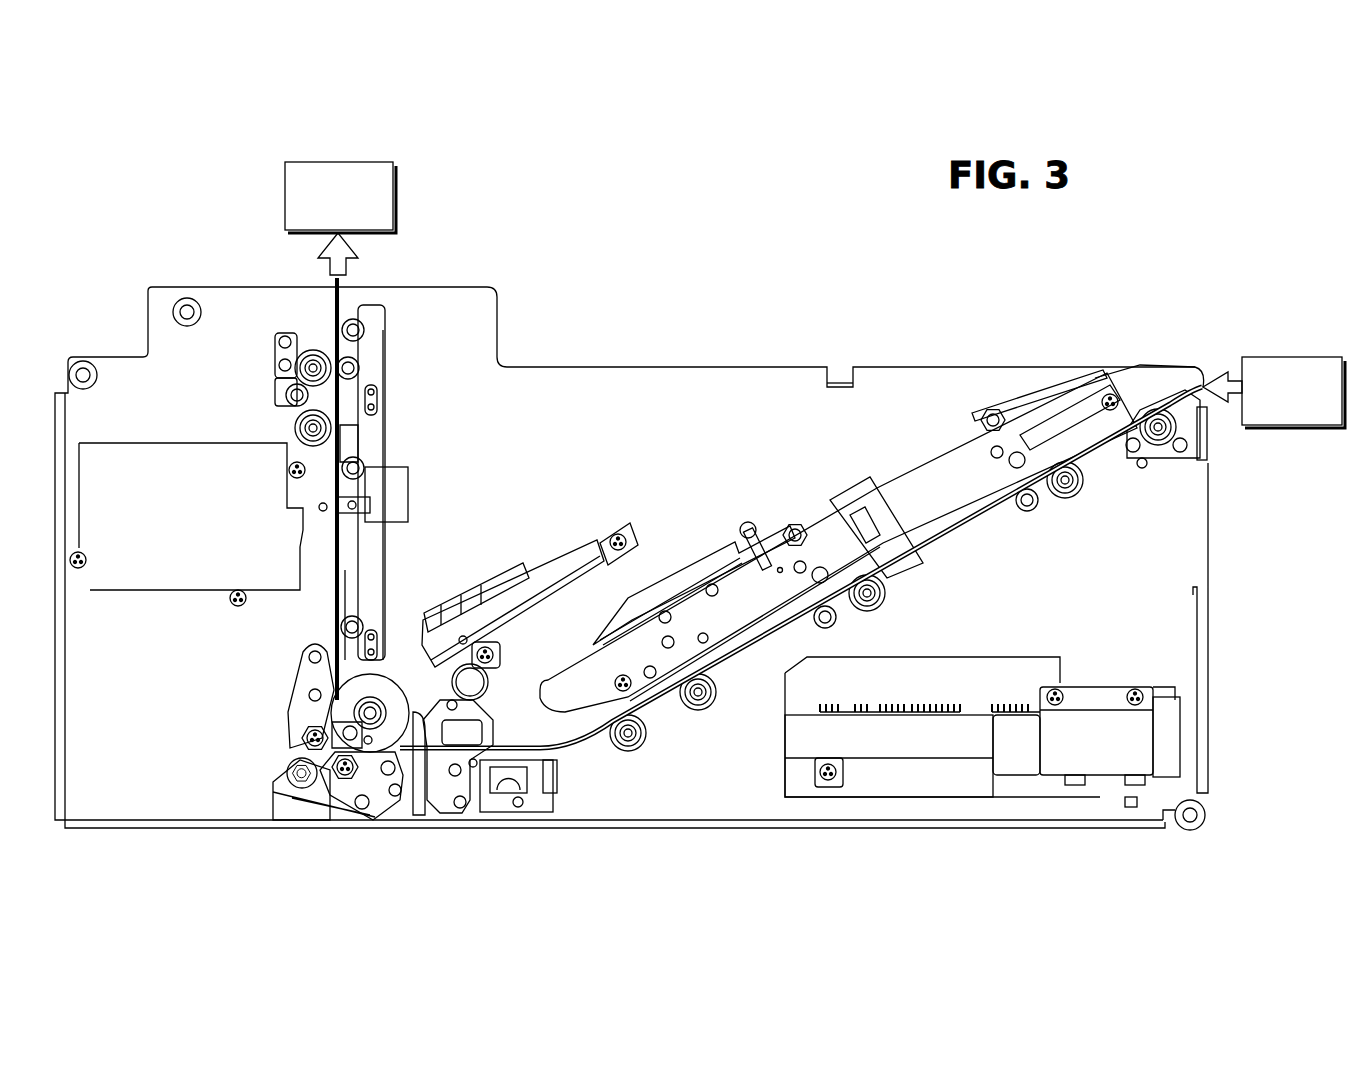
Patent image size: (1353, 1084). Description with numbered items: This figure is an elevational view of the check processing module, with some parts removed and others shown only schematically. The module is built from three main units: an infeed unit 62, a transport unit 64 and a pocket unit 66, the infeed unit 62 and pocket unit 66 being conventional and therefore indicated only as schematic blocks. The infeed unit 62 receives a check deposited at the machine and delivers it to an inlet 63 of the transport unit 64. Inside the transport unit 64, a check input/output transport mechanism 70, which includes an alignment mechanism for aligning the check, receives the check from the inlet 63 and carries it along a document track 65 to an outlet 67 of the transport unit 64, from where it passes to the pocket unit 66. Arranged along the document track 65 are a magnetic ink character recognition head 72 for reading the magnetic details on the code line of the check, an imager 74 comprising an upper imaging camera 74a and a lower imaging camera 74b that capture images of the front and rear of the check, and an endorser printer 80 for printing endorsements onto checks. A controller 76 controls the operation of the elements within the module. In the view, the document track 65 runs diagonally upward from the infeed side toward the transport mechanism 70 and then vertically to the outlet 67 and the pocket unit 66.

The infeed unit 62 is at (1291, 338).
The inlet 63 is at (1200, 387).
The transport unit 64 is at (738, 266).
The document track 65 is at (335, 330).
The pocket unit 66 is at (370, 163).
The outlet 67 is at (333, 287).
The check input/output transport mechanism 70 is at (676, 435).
The magnetic ink character recognition (MICR) head 72 is at (800, 668).
The imager 74 is at (480, 820).
The upper imaging camera 74a is at (475, 710).
The lower imaging camera 74b is at (533, 795).
The controller 76 is at (947, 740).
The endorser printer 80 is at (408, 495).